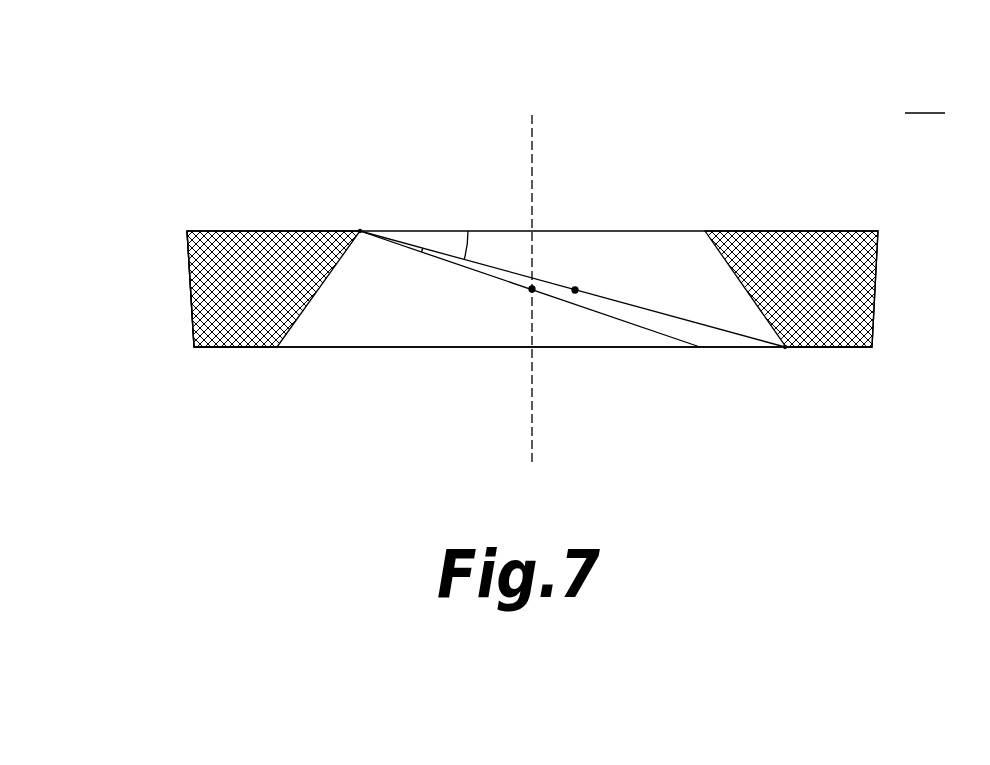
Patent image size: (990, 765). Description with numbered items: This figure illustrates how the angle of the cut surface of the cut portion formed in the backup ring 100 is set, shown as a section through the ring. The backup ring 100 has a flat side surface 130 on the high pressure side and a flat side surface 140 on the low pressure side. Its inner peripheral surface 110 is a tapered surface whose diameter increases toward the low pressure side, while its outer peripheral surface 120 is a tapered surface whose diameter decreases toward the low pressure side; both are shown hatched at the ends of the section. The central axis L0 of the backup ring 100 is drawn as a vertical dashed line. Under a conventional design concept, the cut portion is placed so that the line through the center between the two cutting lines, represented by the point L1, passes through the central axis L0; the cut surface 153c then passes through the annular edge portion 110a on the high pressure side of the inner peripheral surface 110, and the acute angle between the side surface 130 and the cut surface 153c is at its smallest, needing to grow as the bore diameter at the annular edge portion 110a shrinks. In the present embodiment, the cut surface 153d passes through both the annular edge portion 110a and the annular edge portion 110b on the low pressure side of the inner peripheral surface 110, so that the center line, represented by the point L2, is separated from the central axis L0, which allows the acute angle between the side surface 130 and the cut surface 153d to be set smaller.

The backup ring 100 is at (822, 162).
The inner peripheral surface 110 is at (318, 288).
The annular edge portion on the high pressure side 110a is at (360, 231).
The annular edge portion on the low pressure side 110b is at (788, 347).
The outer peripheral surface 120 is at (191, 290).
The side surface on the high pressure side 130 is at (270, 230).
The side surface on the low pressure side 140 is at (232, 347).
The cut surface 153c is at (478, 272).
The cut surface 153d is at (628, 303).
The central axis L0 is at (532, 140).
The point L1 is at (532, 289).
The point L2 is at (575, 289).